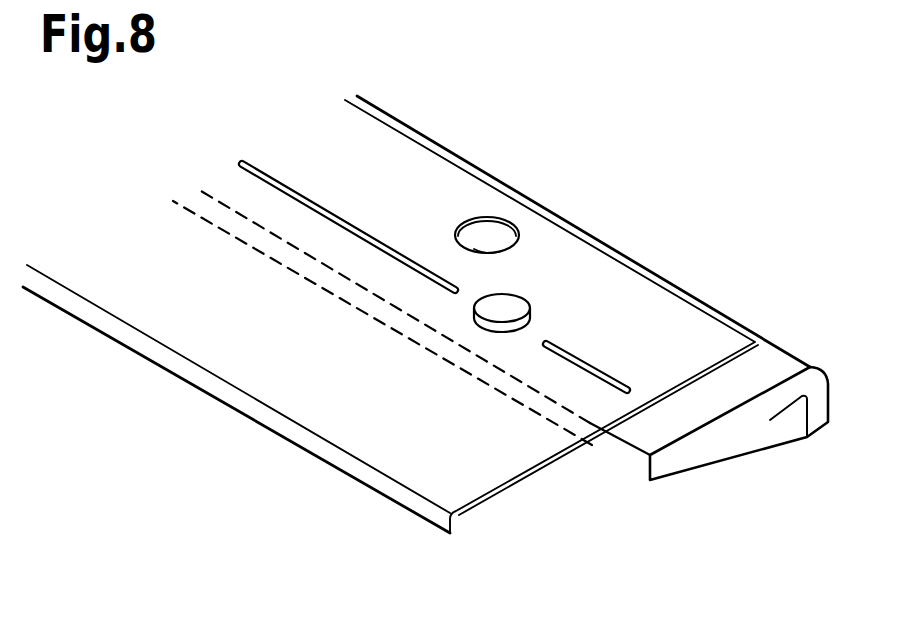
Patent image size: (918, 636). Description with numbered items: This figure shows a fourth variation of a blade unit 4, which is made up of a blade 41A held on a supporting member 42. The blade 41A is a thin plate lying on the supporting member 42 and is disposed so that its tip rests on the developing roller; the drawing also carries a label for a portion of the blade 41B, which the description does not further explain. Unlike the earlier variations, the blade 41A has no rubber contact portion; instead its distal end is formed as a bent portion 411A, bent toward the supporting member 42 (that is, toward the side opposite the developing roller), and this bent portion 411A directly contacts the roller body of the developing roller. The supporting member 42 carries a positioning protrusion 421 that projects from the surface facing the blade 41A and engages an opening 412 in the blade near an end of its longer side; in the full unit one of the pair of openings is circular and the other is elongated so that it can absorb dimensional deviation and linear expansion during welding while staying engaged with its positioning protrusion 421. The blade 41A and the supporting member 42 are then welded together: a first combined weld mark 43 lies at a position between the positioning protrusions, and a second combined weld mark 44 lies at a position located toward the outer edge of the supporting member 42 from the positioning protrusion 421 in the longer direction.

The blade unit 4 is at (688, 167).
The blade 41A is at (497, 469).
The plate portion 41B is at (465, 197).
The bent portion 411A is at (340, 452).
The opening 412 is at (518, 320).
The supporting member 42 is at (703, 440).
The positioning protrusion 421 is at (505, 303).
The first combined weld mark 43 is at (355, 224).
The second combined weld mark 44 is at (613, 378).